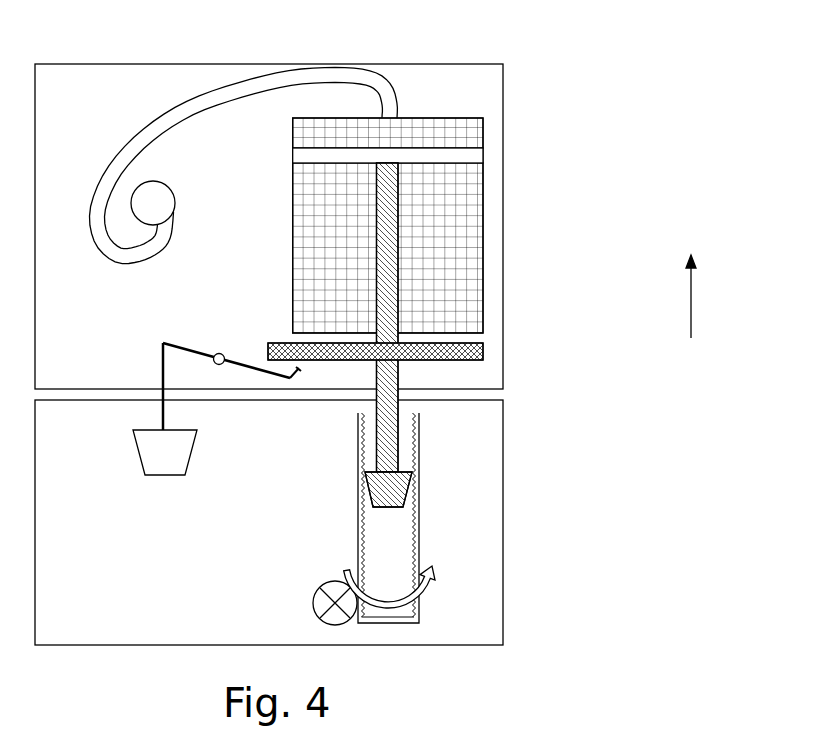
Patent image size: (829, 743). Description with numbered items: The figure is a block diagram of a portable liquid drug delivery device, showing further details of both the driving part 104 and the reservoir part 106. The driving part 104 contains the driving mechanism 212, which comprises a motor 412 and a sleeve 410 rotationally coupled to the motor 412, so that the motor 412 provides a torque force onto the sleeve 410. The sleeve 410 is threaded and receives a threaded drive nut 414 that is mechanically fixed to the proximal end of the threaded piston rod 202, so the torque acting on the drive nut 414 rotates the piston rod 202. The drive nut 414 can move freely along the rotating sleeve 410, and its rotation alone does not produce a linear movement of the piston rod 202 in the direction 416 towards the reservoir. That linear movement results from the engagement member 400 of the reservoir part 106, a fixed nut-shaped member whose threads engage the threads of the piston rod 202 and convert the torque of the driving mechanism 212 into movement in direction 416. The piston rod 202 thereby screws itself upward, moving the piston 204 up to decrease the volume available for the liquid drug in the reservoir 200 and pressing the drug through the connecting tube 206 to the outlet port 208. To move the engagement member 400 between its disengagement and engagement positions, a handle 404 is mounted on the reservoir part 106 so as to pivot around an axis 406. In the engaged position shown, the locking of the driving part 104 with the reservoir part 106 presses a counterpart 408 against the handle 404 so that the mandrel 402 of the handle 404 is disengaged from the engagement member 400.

The driving part 104 is at (503, 487).
The reservoir part 106 is at (503, 196).
The reservoir 200 is at (472, 125).
The threaded piston rod 202 is at (400, 236).
The piston 204 is at (478, 158).
The connecting tube 206 is at (202, 94).
The outlet port 208 is at (173, 185).
The driving mechanism 212 is at (475, 607).
The engagement member 400 is at (484, 352).
The mandrel 402 is at (297, 372).
The handle 404 is at (172, 342).
The axis 406 is at (222, 353).
The counterpart 408 is at (191, 448).
The sleeve 410 is at (358, 507).
The motor 412 is at (313, 602).
The threaded drive nut 414 is at (420, 497).
The direction 416 is at (690, 298).